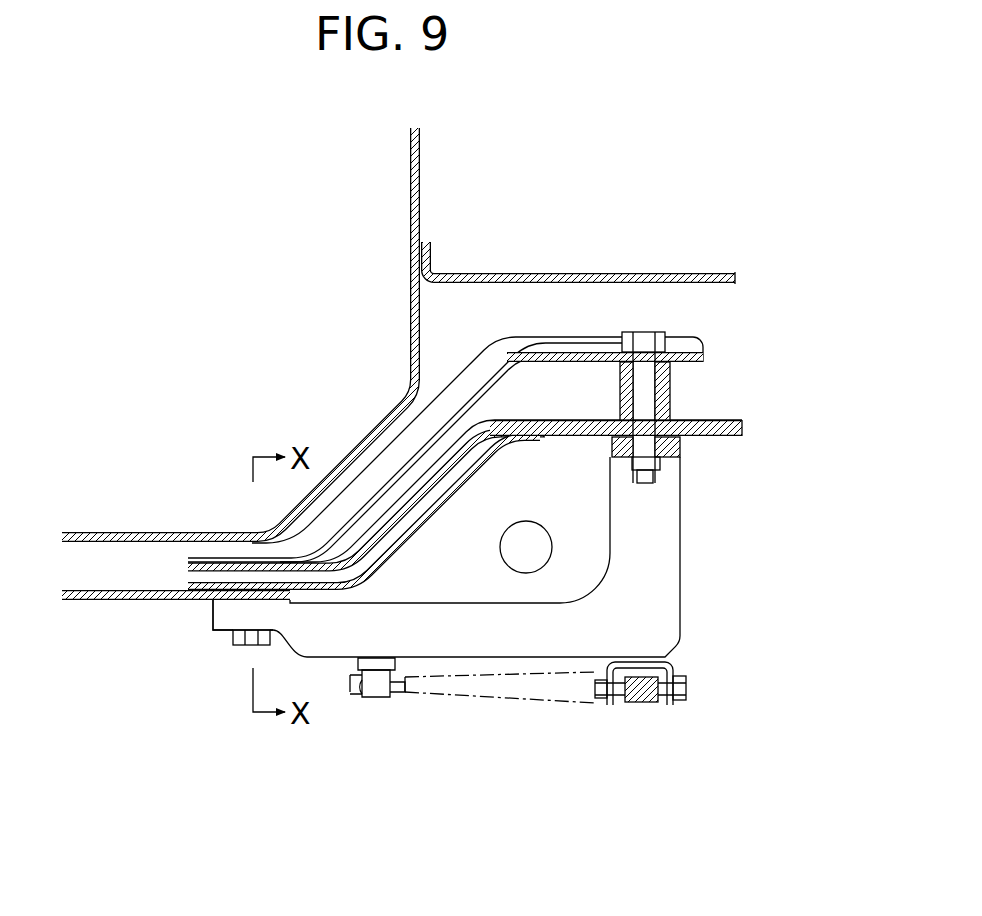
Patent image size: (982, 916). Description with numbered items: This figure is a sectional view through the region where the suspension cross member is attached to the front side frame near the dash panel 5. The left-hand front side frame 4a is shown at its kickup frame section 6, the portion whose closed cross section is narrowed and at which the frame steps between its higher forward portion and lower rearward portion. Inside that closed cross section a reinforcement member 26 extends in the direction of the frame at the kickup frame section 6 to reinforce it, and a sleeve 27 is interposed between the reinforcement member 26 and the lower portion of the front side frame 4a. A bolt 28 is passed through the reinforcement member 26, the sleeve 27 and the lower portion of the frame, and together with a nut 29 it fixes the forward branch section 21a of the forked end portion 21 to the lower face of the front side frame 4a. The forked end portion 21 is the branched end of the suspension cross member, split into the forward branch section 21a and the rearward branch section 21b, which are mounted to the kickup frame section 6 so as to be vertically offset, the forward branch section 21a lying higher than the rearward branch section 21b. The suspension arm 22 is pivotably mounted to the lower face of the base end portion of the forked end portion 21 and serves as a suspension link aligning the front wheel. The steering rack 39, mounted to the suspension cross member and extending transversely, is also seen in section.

The dash panel 5 is at (409, 190).
The left-hand front side frame 4a is at (585, 292).
The kickup frame section 6 is at (458, 484).
The reinforcement member 26 is at (707, 346).
The sleeve 27 is at (622, 402).
The bolt 28 is at (655, 332).
The nut 29 is at (633, 485).
The forked end portion 21 is at (489, 608).
The forward branch section 21a is at (670, 474).
The rearward branch section 21b is at (213, 633).
The steering rack 39 is at (535, 575).
The suspension arm 22 is at (558, 706).